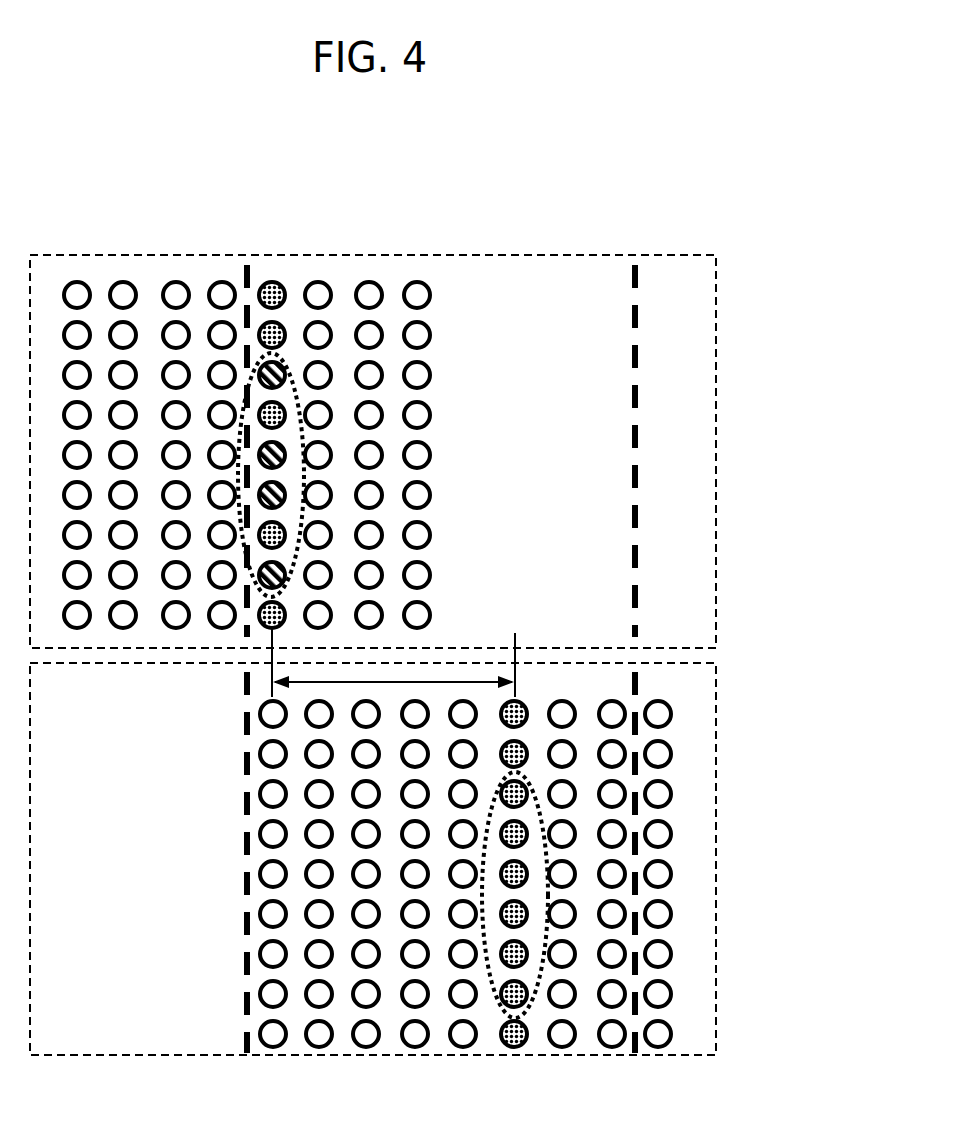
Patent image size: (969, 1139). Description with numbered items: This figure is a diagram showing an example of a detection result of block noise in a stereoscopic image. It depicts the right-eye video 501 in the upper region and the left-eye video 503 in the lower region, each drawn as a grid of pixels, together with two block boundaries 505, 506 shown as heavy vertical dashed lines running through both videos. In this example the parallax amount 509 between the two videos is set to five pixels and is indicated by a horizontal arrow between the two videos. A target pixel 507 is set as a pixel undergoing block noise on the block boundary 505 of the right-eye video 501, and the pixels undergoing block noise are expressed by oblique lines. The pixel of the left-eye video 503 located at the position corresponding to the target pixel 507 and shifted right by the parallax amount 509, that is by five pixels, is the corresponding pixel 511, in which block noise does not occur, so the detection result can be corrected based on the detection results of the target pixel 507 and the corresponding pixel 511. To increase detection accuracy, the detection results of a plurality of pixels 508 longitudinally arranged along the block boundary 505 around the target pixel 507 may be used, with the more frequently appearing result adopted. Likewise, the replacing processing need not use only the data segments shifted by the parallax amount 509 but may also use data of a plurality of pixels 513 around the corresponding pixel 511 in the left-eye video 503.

The right-eye video 501 is at (716, 315).
The left-eye video 503 is at (717, 1018).
The block boundary 505 is at (249, 280).
The block boundary 506 is at (636, 282).
The target pixel 507 is at (281, 457).
The pixels 508 is at (302, 398).
The parallax amount 509 is at (457, 682).
The corresponding pixel 511 is at (527, 917).
The pixels 513 is at (543, 822).